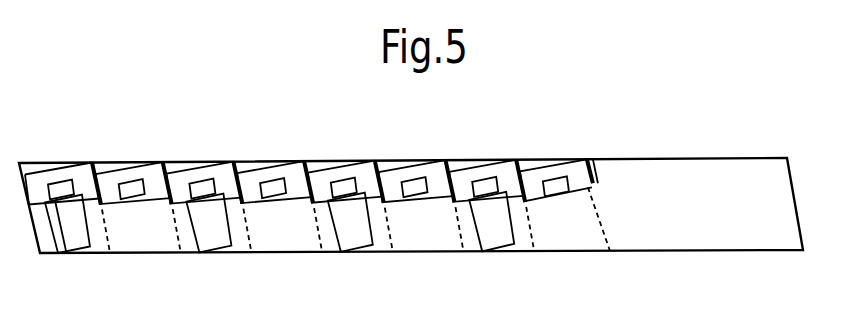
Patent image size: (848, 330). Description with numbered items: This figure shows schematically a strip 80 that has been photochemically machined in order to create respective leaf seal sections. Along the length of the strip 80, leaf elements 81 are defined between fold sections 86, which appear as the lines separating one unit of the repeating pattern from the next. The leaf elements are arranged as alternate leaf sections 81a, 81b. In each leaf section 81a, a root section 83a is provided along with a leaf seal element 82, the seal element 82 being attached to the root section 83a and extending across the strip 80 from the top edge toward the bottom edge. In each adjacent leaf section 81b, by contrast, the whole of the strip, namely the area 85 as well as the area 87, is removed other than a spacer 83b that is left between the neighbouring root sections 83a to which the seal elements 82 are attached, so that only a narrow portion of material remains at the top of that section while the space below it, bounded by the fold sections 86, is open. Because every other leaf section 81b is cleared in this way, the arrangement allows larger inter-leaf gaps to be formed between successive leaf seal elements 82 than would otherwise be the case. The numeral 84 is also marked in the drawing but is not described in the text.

The strip 80 is at (760, 157).
The leaf element 81 is at (243, 237).
The leaf section 81a is at (369, 166).
The leaf section 81b is at (580, 165).
The leaf seal element 82 is at (68, 234).
The root section 83a is at (82, 177).
The spacer 83b is at (300, 165).
The leg edge 84 is at (188, 238).
The area 85 is at (187, 168).
The fold section 86 is at (391, 258).
The area 87 is at (428, 235).